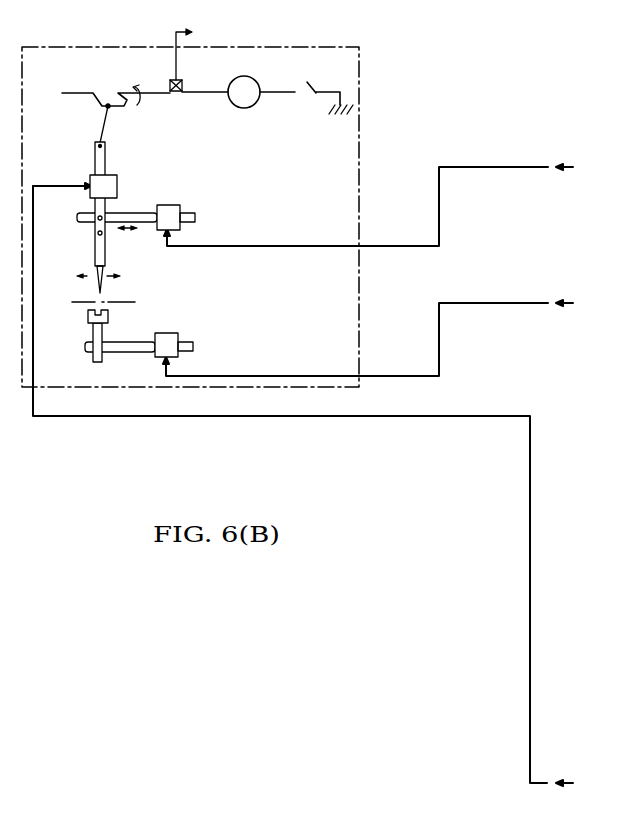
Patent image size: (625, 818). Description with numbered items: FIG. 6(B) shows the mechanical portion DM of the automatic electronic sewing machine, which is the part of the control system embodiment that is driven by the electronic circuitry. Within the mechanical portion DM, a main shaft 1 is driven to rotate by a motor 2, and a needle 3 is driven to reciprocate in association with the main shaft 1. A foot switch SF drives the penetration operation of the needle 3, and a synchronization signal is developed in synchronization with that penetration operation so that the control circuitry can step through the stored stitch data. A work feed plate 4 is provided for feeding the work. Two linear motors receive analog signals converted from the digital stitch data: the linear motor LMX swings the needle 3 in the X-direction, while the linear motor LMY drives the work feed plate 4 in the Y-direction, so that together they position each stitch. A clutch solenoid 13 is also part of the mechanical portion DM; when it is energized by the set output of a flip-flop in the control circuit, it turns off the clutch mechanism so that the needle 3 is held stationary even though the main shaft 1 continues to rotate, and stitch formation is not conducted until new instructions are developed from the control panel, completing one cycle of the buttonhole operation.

The main shaft 1 is at (205, 94).
The motor 2 is at (248, 108).
The needle 3 is at (103, 270).
The work feed plate 4 is at (110, 317).
The clutch solenoid 13 is at (110, 184).
The foot switch SF is at (318, 90).
The mechanical portion DM is at (360, 73).
The linear motor LMX is at (170, 215).
The linear motor LMY is at (170, 340).